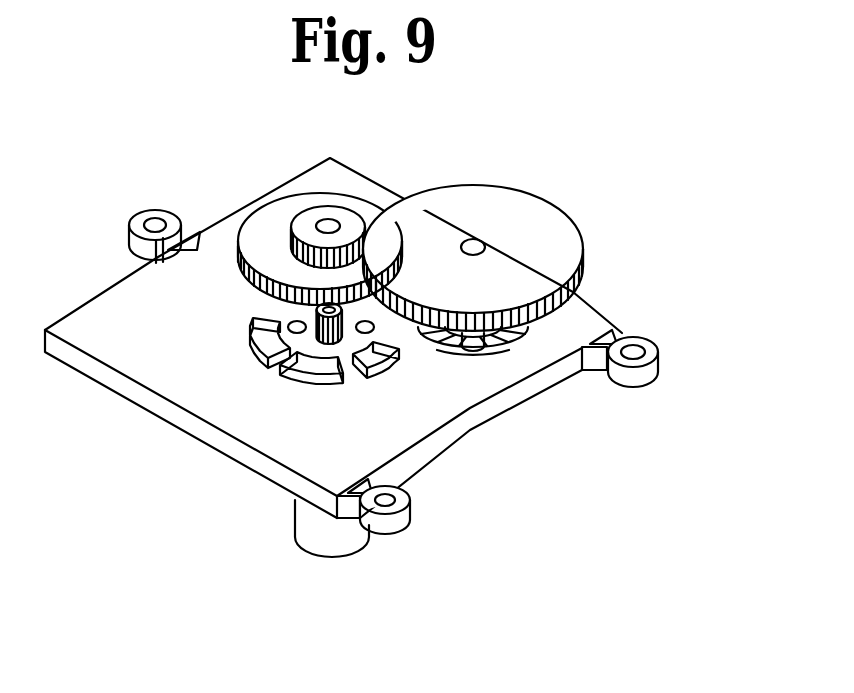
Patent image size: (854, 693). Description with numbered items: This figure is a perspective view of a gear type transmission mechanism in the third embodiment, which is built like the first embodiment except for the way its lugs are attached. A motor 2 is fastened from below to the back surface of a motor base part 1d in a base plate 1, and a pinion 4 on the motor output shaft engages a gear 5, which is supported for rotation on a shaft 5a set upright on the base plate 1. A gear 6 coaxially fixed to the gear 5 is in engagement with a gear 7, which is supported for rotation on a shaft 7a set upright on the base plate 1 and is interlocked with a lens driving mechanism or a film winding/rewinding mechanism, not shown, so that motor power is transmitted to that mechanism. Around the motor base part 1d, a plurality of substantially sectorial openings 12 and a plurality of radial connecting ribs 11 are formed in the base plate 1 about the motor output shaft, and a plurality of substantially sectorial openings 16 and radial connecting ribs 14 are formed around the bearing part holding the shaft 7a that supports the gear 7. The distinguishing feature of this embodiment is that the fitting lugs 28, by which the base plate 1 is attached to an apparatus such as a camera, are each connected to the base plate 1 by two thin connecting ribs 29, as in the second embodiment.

The base plate 1 is at (168, 382).
The motor base part 1d is at (398, 347).
The motor 2 is at (310, 527).
The pinion 4 is at (360, 343).
The gear 5 is at (283, 213).
The shaft 5a is at (332, 226).
The gear 6 is at (328, 212).
The gear 7 is at (483, 203).
The shaft 7a is at (475, 247).
The radial connecting ribs 11 is at (283, 362).
The substantially sectorial openings 12 is at (317, 368).
The radial connecting ribs 14 is at (502, 345).
The substantially sectorial openings 16 is at (478, 345).
The fitting lugs 28 is at (168, 217).
The thin connecting ribs 29 is at (193, 228).